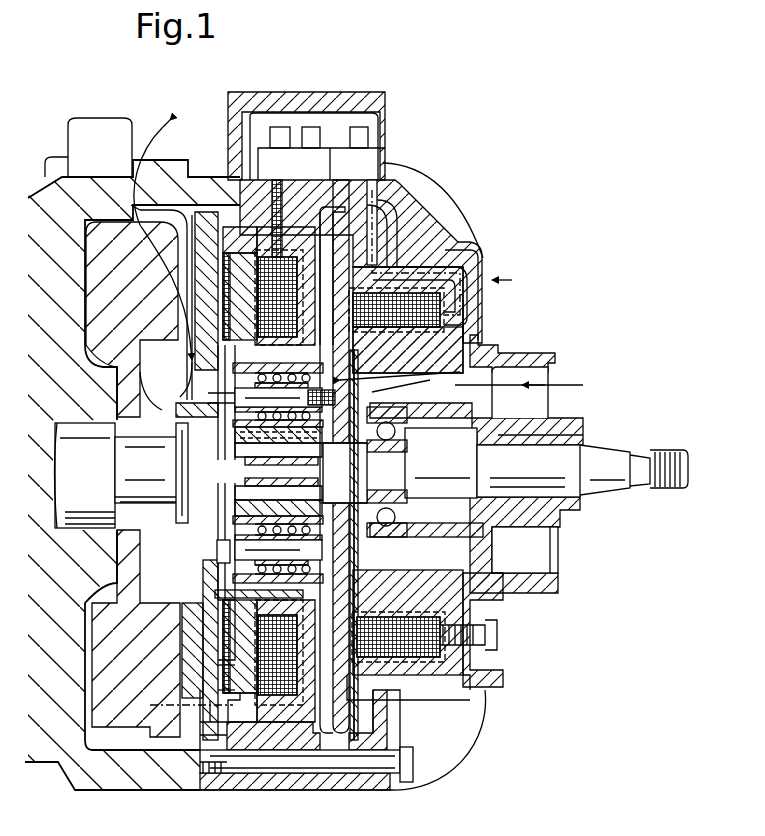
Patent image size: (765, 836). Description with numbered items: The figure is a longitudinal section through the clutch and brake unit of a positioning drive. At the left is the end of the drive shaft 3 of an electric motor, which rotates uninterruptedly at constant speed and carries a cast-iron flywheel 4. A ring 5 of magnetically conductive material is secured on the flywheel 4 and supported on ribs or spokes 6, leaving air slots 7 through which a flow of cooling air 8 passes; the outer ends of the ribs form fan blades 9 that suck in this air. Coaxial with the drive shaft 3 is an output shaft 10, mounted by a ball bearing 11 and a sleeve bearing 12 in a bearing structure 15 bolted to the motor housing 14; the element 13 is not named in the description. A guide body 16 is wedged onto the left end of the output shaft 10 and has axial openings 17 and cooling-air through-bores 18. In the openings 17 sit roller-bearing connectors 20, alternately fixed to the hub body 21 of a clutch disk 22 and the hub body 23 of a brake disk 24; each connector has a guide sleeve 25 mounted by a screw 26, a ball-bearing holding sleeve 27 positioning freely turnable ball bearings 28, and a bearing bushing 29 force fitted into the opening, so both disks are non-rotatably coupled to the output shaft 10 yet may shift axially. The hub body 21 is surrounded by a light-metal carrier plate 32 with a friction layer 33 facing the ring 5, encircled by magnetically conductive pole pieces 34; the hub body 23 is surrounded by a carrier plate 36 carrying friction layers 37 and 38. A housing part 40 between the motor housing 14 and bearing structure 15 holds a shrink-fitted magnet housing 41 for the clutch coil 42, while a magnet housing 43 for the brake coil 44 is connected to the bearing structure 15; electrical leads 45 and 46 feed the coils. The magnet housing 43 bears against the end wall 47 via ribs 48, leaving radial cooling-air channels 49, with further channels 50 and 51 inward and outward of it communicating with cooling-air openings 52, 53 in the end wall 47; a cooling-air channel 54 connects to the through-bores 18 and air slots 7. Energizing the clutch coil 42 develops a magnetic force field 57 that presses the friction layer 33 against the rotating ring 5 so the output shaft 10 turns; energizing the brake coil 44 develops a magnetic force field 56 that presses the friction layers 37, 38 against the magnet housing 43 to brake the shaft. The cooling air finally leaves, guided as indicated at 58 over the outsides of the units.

The drive shaft 3 is at (60, 425).
The flywheel 4 is at (105, 642).
The ring 5 is at (185, 745).
The ribs or spokes 6 is at (182, 650).
The air slots 7 is at (178, 320).
The flow of cooling air 8 is at (185, 368).
The fan blades 9 is at (152, 230).
The output shaft 10 is at (605, 495).
The ball bearing 11 is at (400, 490).
The sleeve bearing 12 is at (580, 432).
The housing part 13 is at (361, 261).
The motor housing 14 is at (115, 792).
The bearing structure 15 is at (385, 782).
The guide body 16 is at (230, 530).
The openings 17 is at (300, 512).
The cooling-air through-bores 18 is at (226, 445).
The roller-bearing connectors 20 is at (212, 565).
The hub body 21 is at (190, 598).
The clutch disk 22 is at (200, 690).
The hub body 23 is at (395, 690).
The brake disk 24 is at (347, 556).
The guide sleeve 25 is at (185, 408).
The screw 26 is at (400, 375).
The ball-bearing holding sleeve 27 is at (245, 512).
The ball bearings 28 is at (270, 515).
The bearing bushing 29 is at (327, 452).
The carrier plate 32 is at (215, 672).
The friction layer 33 is at (210, 630).
The pole pieces 34 is at (220, 740).
The carrier plate 36 is at (333, 735).
The friction layer 37 is at (375, 553).
The friction layer 38 is at (355, 740).
The housing part 40 is at (272, 790).
The magnet housing 41 is at (190, 248).
The clutch coil 42 is at (283, 300).
The magnet housing 43 is at (455, 272).
The brake coil 44 is at (406, 320).
The electrical leads 45 is at (274, 198).
The electrical leads 46 is at (478, 262).
The end wall 47 is at (497, 608).
The ribs 48 is at (465, 335).
The radial cooling-air channels 49 is at (462, 320).
The cooling-air channel 50 is at (420, 585).
The cooling-air channel 51 is at (468, 247).
The cooling-air openings 52 is at (493, 392).
The cooling-air openings 53 is at (498, 270).
The cooling-air channel 54 is at (345, 372).
The magnetic force field 56 is at (475, 690).
The magnetic force field 57 is at (205, 715).
The guided air flow 58 is at (140, 98).